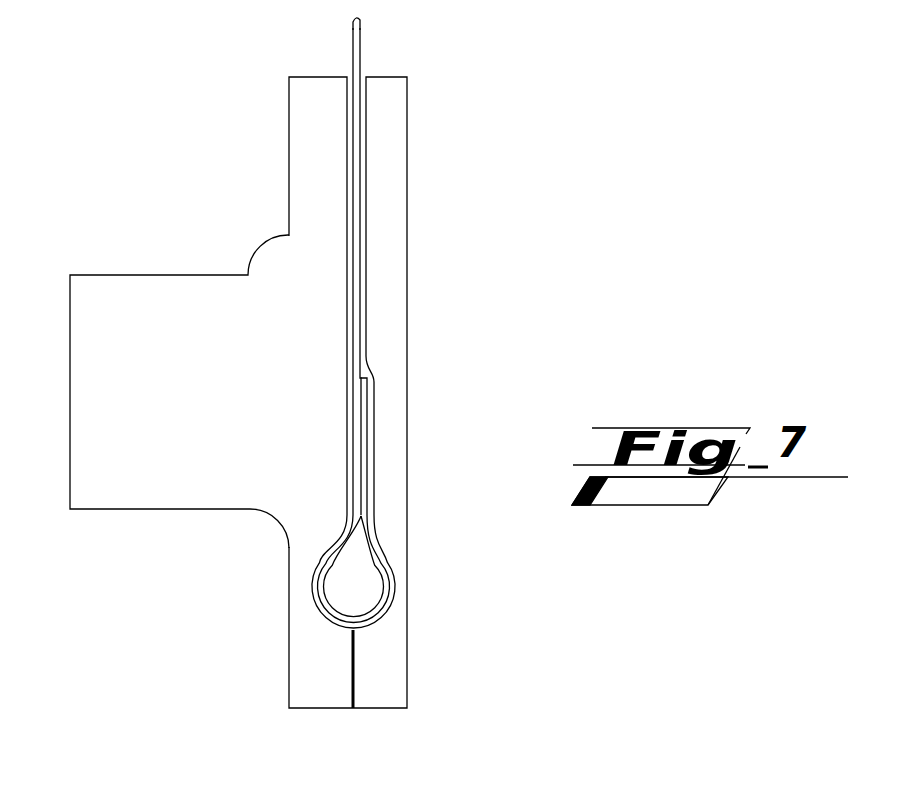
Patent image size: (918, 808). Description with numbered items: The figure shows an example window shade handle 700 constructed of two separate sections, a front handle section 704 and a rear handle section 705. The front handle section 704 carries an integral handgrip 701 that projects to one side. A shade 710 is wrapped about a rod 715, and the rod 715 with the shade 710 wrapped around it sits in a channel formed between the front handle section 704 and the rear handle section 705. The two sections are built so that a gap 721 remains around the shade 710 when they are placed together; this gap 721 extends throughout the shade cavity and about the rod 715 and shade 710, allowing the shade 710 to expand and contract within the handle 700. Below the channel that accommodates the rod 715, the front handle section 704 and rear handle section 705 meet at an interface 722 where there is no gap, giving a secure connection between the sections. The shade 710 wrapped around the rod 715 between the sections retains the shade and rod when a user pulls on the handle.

The handle 700 is at (502, 257).
The handgrip 701 is at (183, 510).
The front handle section 704 is at (288, 155).
The rear handle section 705 is at (408, 155).
The shade 710 is at (359, 62).
The rod 715 is at (362, 577).
The gap 721 is at (345, 74).
The interface 722 is at (355, 657).